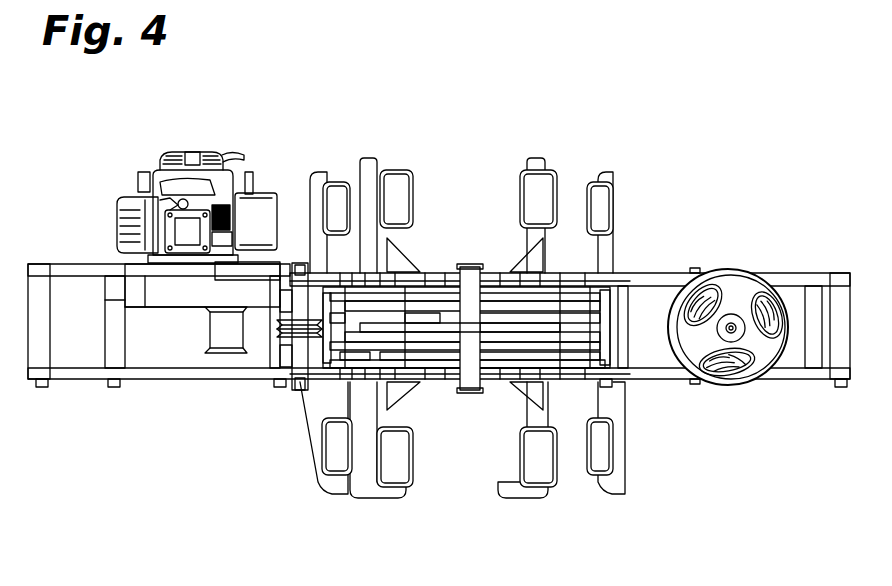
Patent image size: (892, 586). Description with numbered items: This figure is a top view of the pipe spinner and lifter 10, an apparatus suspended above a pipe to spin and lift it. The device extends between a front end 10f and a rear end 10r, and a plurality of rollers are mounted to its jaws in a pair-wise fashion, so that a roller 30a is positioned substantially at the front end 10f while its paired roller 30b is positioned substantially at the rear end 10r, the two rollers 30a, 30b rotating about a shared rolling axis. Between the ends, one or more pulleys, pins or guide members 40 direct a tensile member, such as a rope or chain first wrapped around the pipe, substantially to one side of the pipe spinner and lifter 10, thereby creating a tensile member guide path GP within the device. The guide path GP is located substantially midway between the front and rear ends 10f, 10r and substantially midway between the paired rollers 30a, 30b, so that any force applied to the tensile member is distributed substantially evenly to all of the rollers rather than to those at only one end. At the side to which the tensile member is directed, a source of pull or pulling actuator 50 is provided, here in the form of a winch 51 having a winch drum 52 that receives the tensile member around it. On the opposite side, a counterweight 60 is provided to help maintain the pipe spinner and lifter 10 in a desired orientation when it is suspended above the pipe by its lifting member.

The pipe spinner and lifter 10 is at (653, 105).
The rear end 10r is at (305, 138).
The front end 10f is at (225, 450).
The roller 30a is at (330, 462).
The roller 30b is at (342, 193).
The pulleys, pins or guide members 40 is at (314, 318).
The tensile member guide path GP is at (386, 330).
The source of pull or pulling actuator 50 is at (118, 172).
The winch 51 is at (197, 207).
The winch drum 52 is at (197, 340).
The counterweight 60 is at (737, 257).